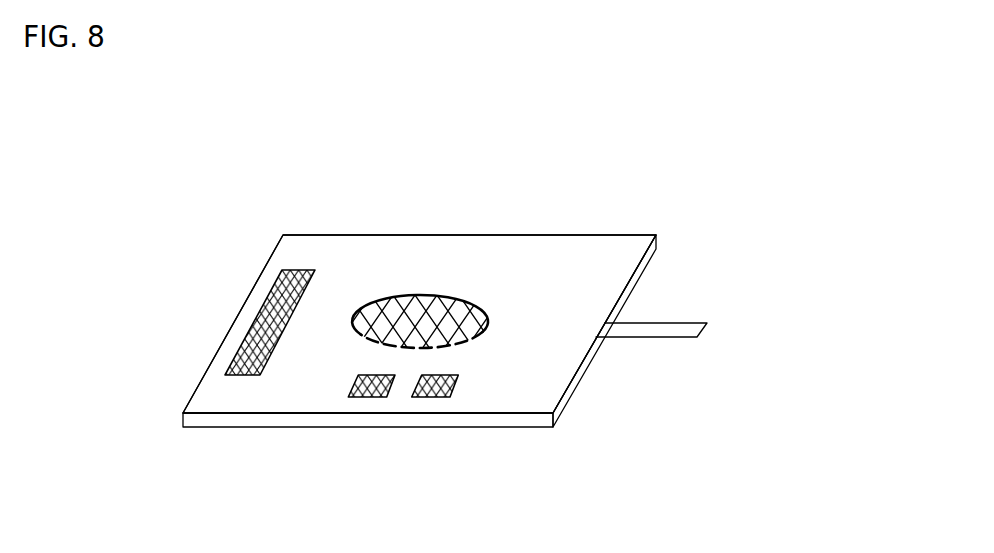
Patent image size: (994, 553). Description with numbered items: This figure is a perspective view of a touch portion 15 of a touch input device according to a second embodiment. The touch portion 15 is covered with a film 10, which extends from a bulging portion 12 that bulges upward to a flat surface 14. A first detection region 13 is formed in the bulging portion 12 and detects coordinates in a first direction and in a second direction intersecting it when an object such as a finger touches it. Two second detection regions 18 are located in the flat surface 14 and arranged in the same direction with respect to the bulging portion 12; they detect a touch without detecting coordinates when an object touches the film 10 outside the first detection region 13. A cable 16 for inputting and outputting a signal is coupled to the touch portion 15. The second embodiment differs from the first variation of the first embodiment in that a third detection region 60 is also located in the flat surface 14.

The film 10 is at (630, 245).
The bulging portion 12 is at (474, 297).
The first detection region 13 is at (394, 297).
The flat surface 14 is at (532, 262).
The touch portion 15 is at (595, 180).
The cable 16 is at (670, 323).
The second detection regions 18 is at (373, 397).
The third detection region 60 is at (237, 377).